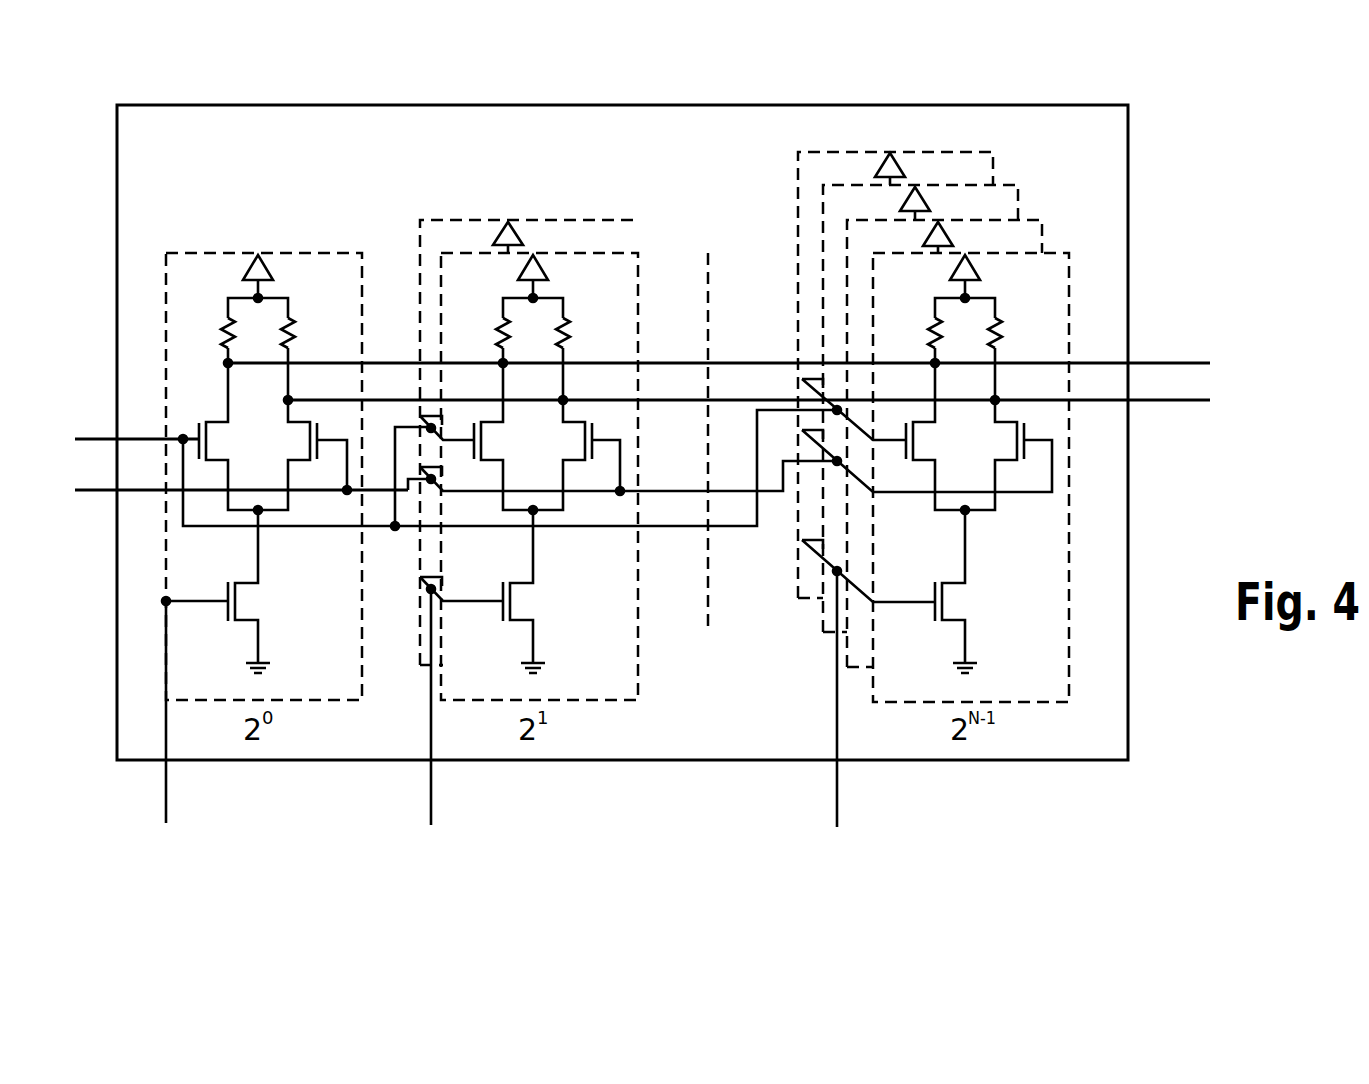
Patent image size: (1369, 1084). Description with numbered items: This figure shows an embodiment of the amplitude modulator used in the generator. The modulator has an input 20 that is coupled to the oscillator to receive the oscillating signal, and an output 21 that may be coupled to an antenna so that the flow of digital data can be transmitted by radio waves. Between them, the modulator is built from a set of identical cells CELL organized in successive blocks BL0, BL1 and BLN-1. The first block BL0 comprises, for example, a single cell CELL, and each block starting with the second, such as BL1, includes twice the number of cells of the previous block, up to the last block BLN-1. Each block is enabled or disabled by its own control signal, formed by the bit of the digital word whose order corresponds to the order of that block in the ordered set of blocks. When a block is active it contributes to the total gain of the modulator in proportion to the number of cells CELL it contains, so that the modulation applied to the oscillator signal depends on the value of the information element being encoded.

The input 20 is at (215, 464).
The output 21 is at (750, 381).
The cell CELL is at (300, 252).
The first block BL0 is at (238, 248).
The second block BL1 is at (497, 195).
The last block BLN-1 is at (848, 130).